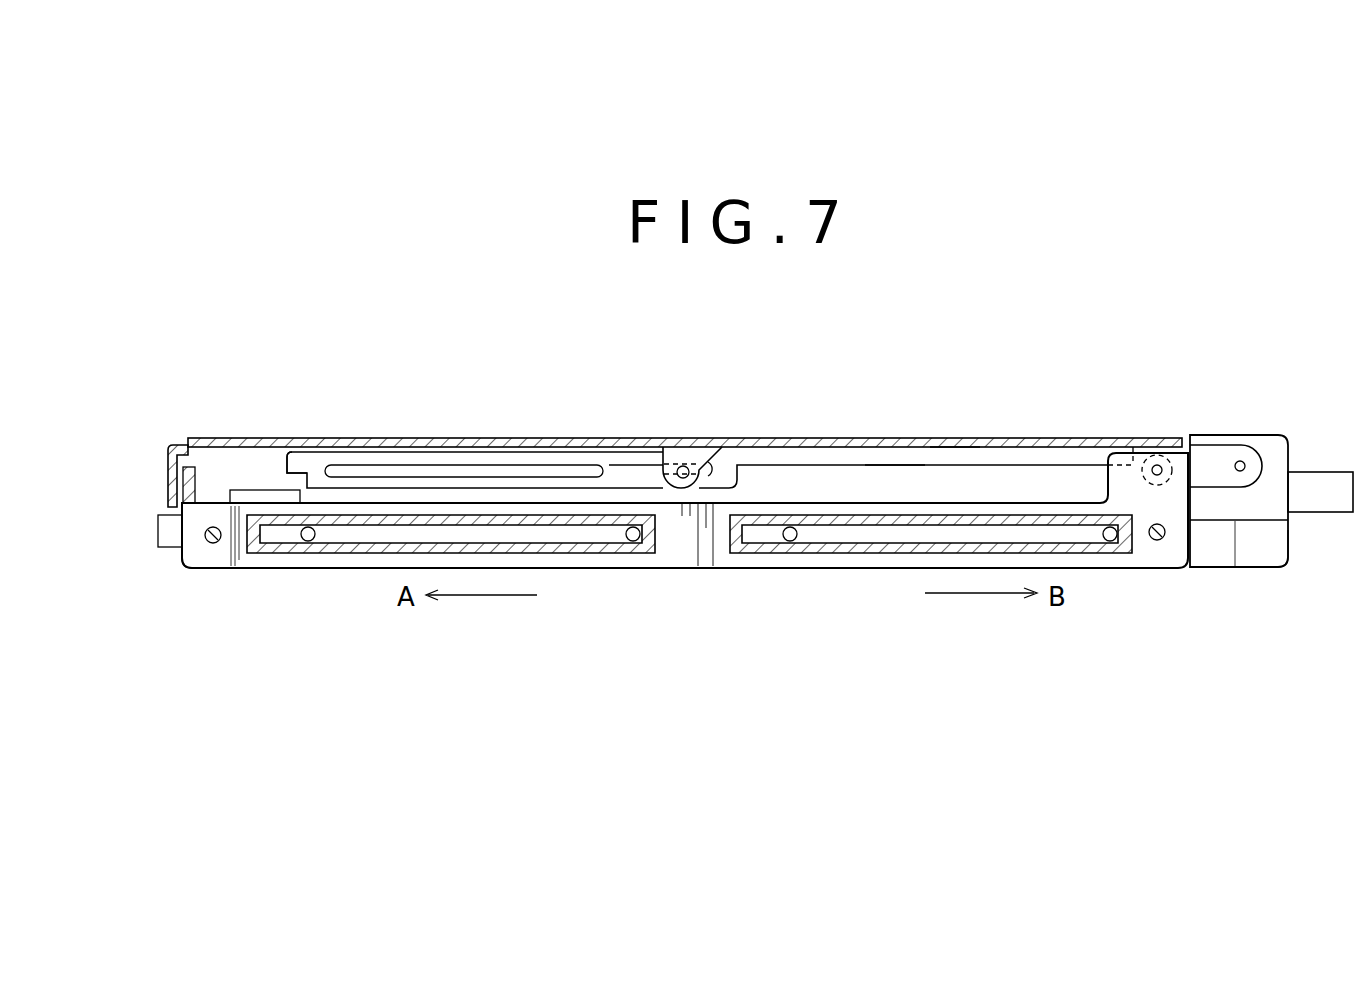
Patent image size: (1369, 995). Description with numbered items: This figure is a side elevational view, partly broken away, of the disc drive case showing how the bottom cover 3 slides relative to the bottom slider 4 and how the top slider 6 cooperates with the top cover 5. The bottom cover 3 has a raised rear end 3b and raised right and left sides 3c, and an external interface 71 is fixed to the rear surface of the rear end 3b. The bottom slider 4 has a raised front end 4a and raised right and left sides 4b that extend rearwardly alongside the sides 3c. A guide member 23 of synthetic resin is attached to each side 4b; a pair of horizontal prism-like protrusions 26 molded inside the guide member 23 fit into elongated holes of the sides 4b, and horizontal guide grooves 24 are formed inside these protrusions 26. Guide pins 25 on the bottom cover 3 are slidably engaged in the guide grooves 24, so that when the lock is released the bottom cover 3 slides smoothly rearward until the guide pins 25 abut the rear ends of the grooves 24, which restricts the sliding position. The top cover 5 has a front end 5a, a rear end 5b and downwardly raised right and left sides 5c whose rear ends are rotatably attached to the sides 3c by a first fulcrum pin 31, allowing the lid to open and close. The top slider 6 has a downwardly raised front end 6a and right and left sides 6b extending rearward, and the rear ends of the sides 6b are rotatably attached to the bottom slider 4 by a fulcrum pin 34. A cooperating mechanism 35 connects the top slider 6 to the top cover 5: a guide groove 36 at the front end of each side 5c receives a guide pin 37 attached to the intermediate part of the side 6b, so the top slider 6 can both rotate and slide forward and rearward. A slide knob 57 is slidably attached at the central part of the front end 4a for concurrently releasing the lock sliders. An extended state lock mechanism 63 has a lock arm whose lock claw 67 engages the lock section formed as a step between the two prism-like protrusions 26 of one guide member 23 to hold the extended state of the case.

The bottom cover 3 is at (1212, 577).
The rear end 3b is at (1291, 553).
The right and left sides 3c is at (1253, 556).
The bottom slider 4 is at (381, 576).
The front end 4a is at (184, 563).
The right and left sides 4b is at (592, 562).
The top cover 5 is at (830, 458).
The front end 5a is at (286, 462).
The rear end 5b is at (1200, 455).
The right and left sides 5c is at (893, 462).
The top slider 6 is at (519, 433).
The front end 6a is at (171, 480).
The right and left sides 6b is at (955, 446).
The guide member 23 is at (650, 560).
The guide groove 24 is at (345, 551).
The guide pin 25 is at (306, 545).
The prism-like protrusion 26 is at (547, 556).
The first fulcrum pin 31 is at (1240, 460).
The fulcrum pin 34 is at (1148, 466).
The cooperating mechanism 35 is at (663, 431).
The guide groove 36 is at (600, 466).
The guide pin 37 is at (685, 466).
The slide knob 57 is at (164, 536).
The extended state lock mechanism 63 is at (237, 480).
The lock claw 67 is at (262, 490).
The external interface 71 is at (1327, 482).